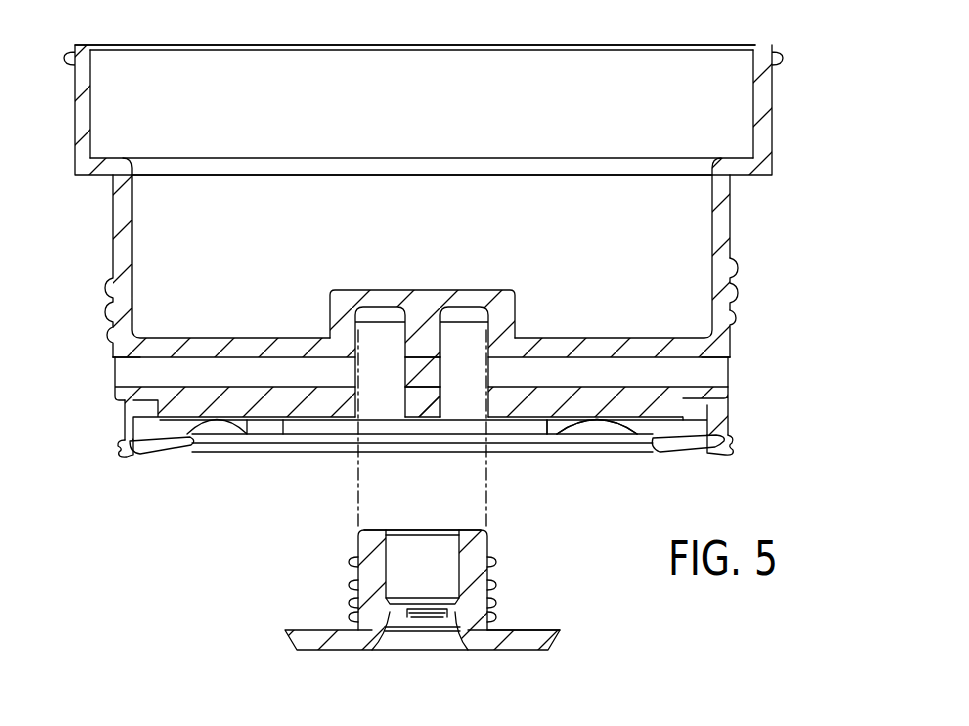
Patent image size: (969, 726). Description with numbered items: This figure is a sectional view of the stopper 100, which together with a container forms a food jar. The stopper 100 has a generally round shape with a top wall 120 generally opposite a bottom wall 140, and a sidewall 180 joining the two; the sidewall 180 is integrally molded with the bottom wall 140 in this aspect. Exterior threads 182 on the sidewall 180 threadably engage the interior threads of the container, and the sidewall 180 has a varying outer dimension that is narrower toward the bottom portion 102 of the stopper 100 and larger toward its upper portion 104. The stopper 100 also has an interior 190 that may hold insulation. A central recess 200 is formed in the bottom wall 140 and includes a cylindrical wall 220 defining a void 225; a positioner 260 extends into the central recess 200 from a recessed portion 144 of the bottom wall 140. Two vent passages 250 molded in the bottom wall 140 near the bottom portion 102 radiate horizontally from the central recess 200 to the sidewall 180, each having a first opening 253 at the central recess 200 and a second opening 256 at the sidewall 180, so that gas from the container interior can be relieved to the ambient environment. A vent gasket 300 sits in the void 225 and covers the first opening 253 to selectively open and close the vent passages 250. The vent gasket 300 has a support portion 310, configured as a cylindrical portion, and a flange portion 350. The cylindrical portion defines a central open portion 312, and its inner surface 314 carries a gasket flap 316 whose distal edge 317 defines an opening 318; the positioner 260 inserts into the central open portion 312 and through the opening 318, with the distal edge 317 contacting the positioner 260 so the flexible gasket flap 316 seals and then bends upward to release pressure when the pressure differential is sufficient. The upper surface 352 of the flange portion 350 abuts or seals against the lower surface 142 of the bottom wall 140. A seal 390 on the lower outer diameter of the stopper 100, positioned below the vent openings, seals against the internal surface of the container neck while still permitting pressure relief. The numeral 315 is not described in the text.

The stopper 100 is at (852, 187).
The bottom portion 102 is at (733, 330).
The upper portion 104 is at (770, 110).
The top wall 120 is at (591, 45).
The bottom wall 140 is at (640, 422).
The lower surface 142 is at (548, 420).
The recessed portion 144 is at (463, 295).
The sidewall 180 is at (723, 193).
The exterior threads 182 is at (737, 273).
The interior 190 is at (173, 198).
The central recess 200 is at (373, 393).
The cylindrical wall 220 is at (348, 322).
The void 225 is at (393, 393).
The vent passages 250 is at (253, 368).
The first opening 253 is at (328, 376).
The second opening 256 is at (127, 378).
The positioner 260 is at (422, 365).
The vent gasket 300 is at (478, 581).
The support portion 310 is at (477, 572).
The central open portion 312 is at (425, 562).
The inner surface 314 is at (397, 553).
The insert top 315 is at (472, 530).
The gasket flap 316 is at (443, 613).
The distal edge 317 is at (427, 613).
The opening 318 is at (413, 617).
The flange portion 350 is at (530, 648).
The upper surface 352 is at (542, 628).
The seal 390 is at (713, 445).